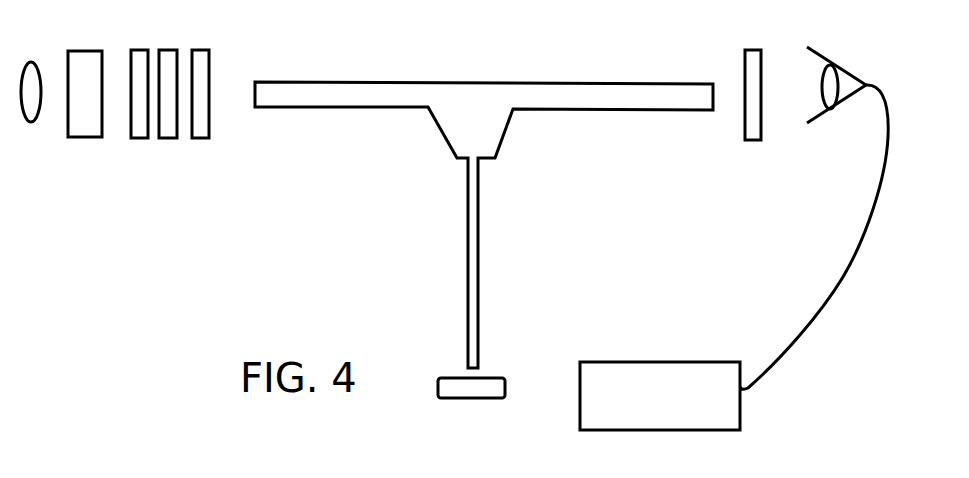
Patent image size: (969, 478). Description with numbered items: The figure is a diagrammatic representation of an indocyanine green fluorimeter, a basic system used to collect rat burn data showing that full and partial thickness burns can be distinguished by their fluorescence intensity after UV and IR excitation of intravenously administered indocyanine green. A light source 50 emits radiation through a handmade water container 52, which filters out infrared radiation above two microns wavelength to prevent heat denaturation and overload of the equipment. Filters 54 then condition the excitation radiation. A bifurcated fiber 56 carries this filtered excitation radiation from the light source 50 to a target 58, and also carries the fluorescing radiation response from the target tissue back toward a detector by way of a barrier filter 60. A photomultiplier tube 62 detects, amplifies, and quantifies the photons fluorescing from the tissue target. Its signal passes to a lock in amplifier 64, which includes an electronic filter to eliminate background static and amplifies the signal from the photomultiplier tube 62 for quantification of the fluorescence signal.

The light source 50 is at (31, 62).
The water container 52 is at (94, 123).
The filters 54 is at (213, 146).
The bifurcated fiber 56 is at (415, 110).
The target 58 is at (497, 378).
The barrier filter 60 is at (753, 130).
The photomultiplier tube 62 is at (840, 108).
The lock in amplifier 64 is at (741, 407).